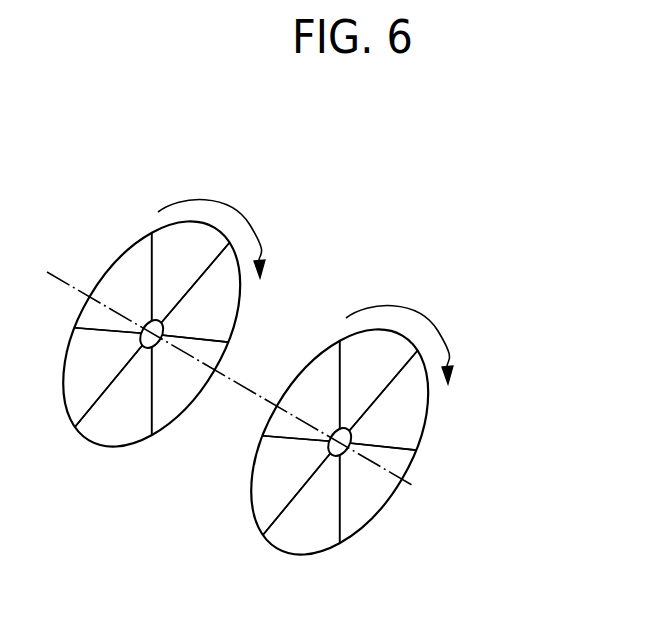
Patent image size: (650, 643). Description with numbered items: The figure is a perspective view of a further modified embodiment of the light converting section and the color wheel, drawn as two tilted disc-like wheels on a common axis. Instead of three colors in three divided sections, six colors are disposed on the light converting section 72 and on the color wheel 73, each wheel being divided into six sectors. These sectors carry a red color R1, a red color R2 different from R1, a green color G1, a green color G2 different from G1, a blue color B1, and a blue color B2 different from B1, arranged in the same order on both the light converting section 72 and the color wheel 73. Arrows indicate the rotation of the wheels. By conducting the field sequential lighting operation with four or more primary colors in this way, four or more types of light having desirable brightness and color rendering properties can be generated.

The light converting section 72 is at (120, 245).
The color wheel 73 is at (315, 360).
The green color G1 is at (206, 337).
The blue color B1 is at (285, 337).
The red color different from R1 R2 is at (285, 347).
The red color R1 is at (206, 431).
The green color different from G1 G2 is at (284, 438).
The blue color different from B1 B2 is at (207, 438).